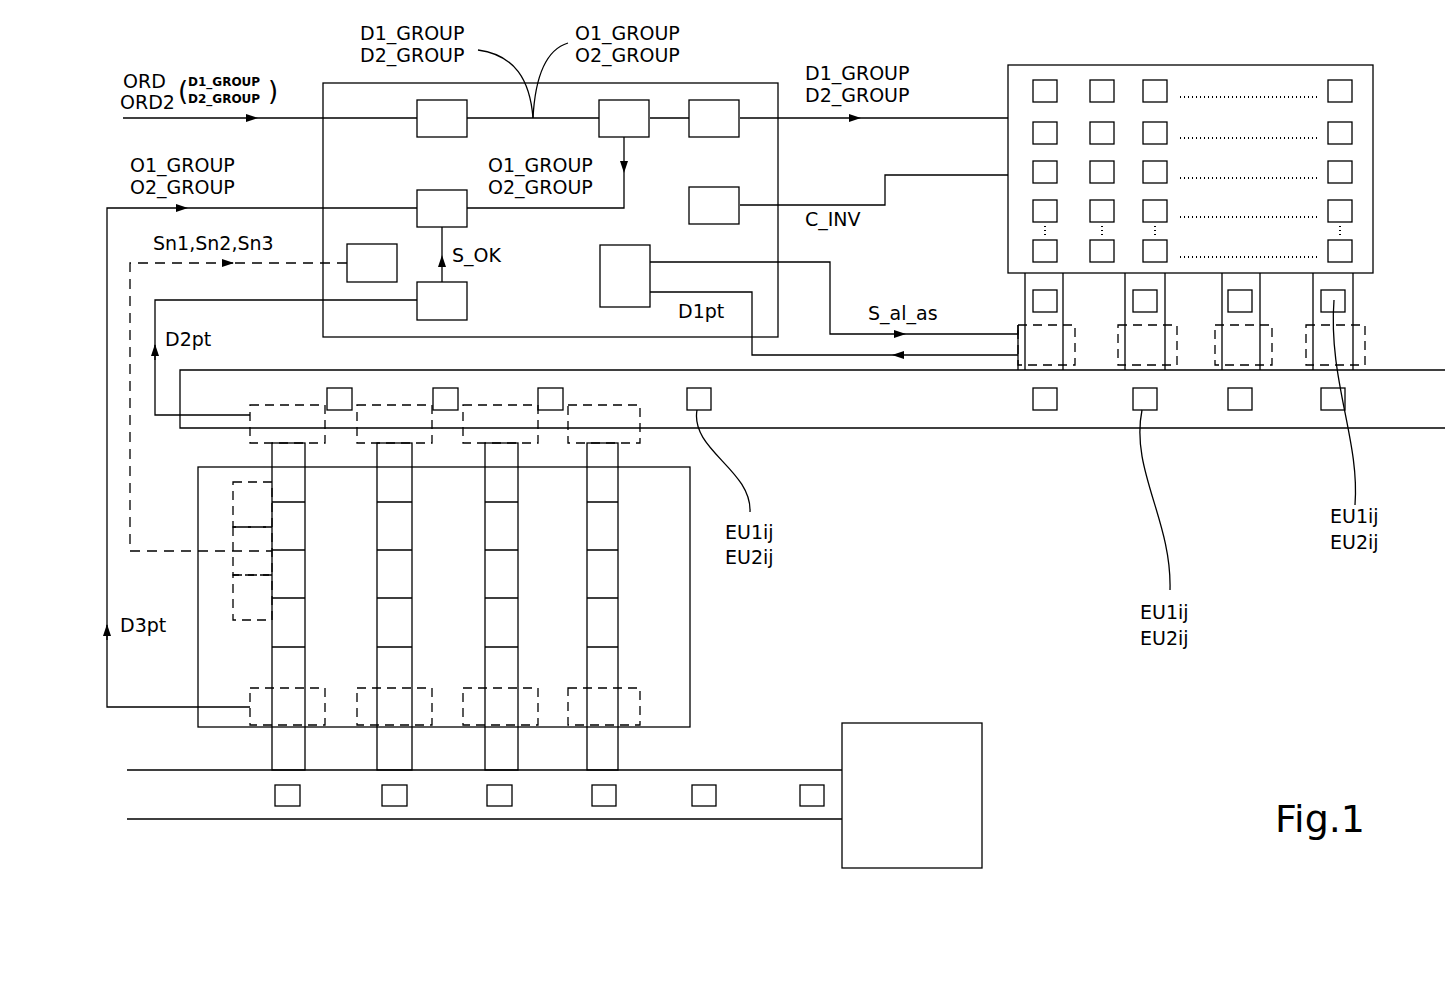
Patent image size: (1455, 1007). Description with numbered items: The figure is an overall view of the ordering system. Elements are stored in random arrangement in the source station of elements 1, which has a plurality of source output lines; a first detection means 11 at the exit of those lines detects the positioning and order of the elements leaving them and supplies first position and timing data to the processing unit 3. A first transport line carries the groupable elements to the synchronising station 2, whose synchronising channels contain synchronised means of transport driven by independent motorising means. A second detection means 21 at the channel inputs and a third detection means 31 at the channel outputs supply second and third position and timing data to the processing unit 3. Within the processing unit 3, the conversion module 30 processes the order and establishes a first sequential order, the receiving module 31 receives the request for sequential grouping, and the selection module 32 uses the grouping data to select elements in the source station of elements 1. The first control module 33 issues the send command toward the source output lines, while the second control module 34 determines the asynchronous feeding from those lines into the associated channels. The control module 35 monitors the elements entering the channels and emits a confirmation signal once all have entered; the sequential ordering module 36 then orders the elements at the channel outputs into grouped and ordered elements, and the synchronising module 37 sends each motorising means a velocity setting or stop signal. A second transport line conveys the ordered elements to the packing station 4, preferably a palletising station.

The source station of elements 1 is at (1176, 172).
The synchronising station 2 is at (487, 661).
The processing unit 3 is at (690, 338).
The packing station 4 is at (985, 760).
The first detection means 11 is at (1018, 350).
The second detection means 21 is at (250, 440).
The conversion module 30 is at (455, 131).
The receiving module 31 is at (637, 131).
The selection module 32 is at (727, 131).
The first control module 33 is at (727, 218).
The second control module 34 is at (637, 277).
The control module 35 is at (455, 314).
The sequential ordering module 36 is at (455, 221).
The synchronising module 37 is at (385, 276).